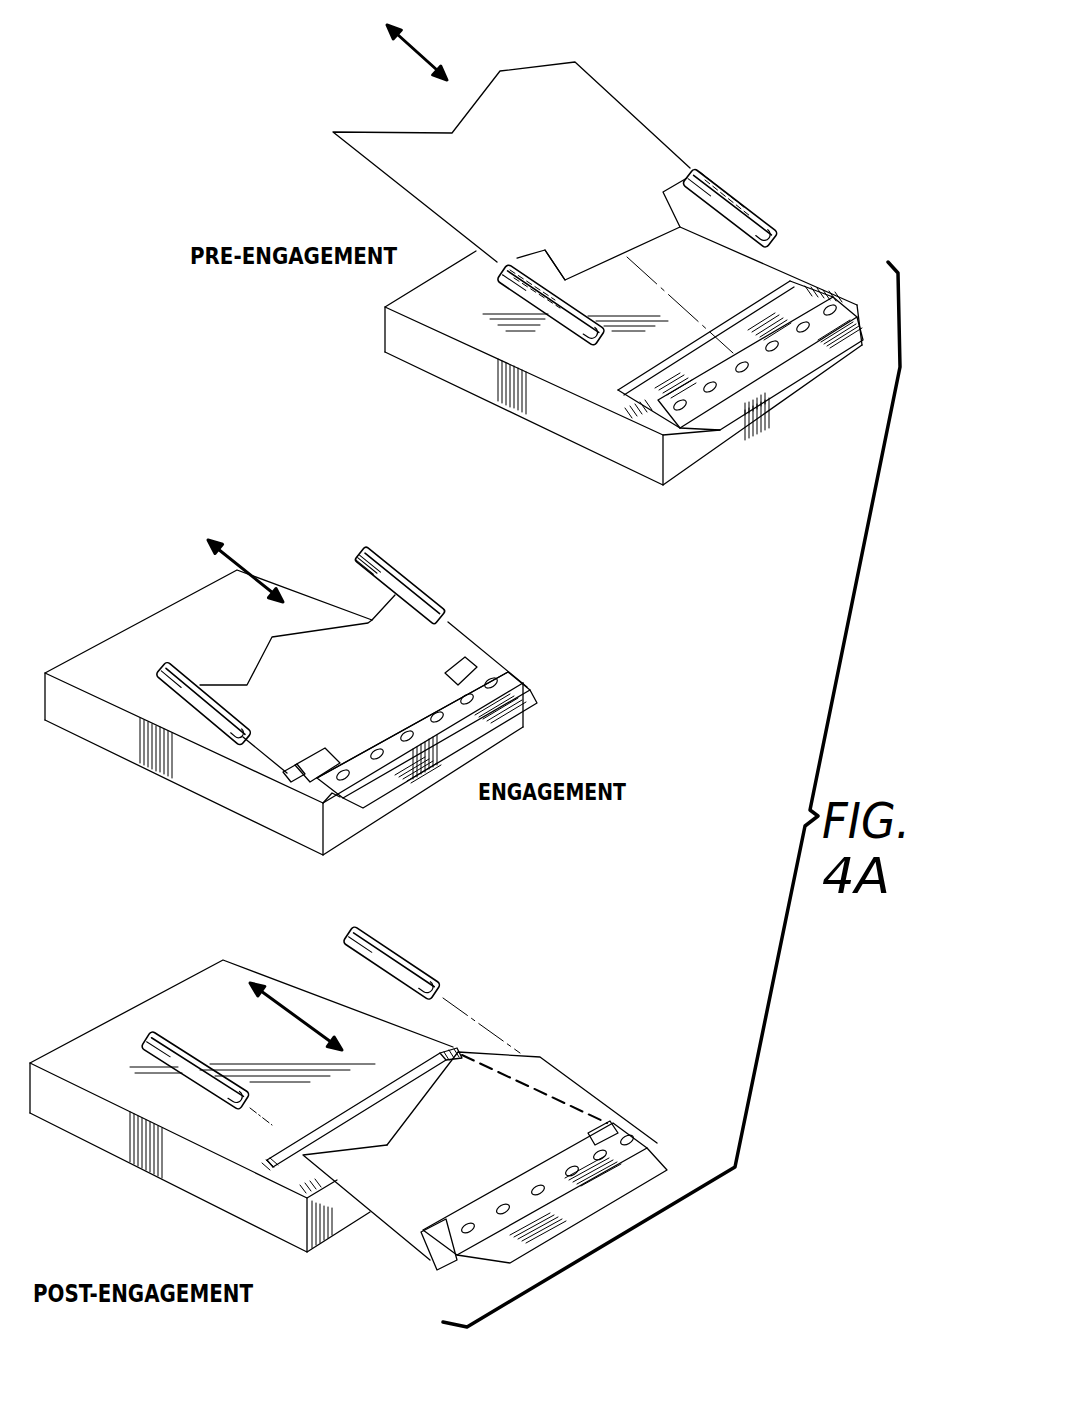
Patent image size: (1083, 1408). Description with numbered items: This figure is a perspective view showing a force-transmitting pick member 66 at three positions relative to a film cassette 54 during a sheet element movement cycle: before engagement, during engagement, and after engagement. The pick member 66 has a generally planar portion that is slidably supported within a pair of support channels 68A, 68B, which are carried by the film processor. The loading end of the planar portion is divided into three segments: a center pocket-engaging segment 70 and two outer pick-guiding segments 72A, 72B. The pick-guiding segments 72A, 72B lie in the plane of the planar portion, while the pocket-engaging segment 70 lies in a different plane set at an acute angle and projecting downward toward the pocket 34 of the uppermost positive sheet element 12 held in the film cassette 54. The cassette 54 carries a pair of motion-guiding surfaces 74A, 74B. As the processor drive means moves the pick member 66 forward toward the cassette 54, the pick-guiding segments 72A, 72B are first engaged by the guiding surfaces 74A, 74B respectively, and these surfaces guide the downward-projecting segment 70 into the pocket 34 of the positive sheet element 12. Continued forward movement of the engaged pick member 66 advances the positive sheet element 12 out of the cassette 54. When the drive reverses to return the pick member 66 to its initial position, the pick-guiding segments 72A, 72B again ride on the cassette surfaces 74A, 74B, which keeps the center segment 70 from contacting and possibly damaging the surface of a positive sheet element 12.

The positive sheet element 12 is at (777, 307).
The pocket 34 is at (741, 340).
The film cassette 54 is at (410, 347).
The pick member 66 is at (535, 80).
The support channel 68A is at (753, 215).
The support channel 68B is at (567, 312).
The pocket-engaging segment 70 is at (597, 243).
The pick-guiding segment 72A is at (712, 173).
The pick-guiding segment 72B is at (507, 282).
The motion-guiding surface 74A is at (813, 290).
The motion-guiding surface 74B is at (633, 413).